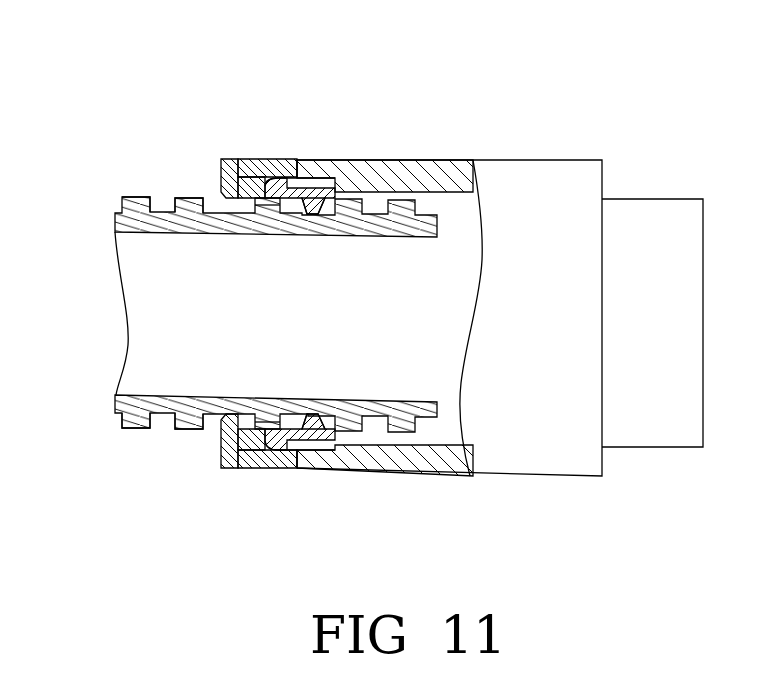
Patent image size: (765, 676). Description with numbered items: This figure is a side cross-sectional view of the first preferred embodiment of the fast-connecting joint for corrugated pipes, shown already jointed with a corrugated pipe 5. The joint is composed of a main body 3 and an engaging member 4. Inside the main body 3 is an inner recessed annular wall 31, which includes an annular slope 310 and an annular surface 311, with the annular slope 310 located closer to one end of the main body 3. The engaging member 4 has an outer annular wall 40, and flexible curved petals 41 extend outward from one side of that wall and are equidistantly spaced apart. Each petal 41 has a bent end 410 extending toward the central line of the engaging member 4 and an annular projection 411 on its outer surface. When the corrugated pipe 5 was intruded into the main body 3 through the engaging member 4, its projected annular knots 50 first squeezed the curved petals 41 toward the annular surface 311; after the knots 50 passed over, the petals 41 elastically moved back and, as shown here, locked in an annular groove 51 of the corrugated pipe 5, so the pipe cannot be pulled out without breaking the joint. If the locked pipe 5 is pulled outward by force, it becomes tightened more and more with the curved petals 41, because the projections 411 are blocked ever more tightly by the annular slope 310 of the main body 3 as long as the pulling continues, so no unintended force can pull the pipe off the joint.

The main body 3 is at (496, 305).
The inner recessed annular wall 31 is at (298, 160).
The annular slope 310 is at (261, 178).
The annular surface 311 is at (316, 170).
The engaging member 4 is at (291, 291).
The outer annular wall 40 is at (229, 462).
The flexible curved petals 41 is at (300, 432).
The bent end 410 is at (322, 196).
The annular projection 411 is at (284, 180).
The corrugated pipe 5 is at (112, 198).
The projected annular knots 50 is at (176, 432).
The annular groove 51 is at (210, 203).